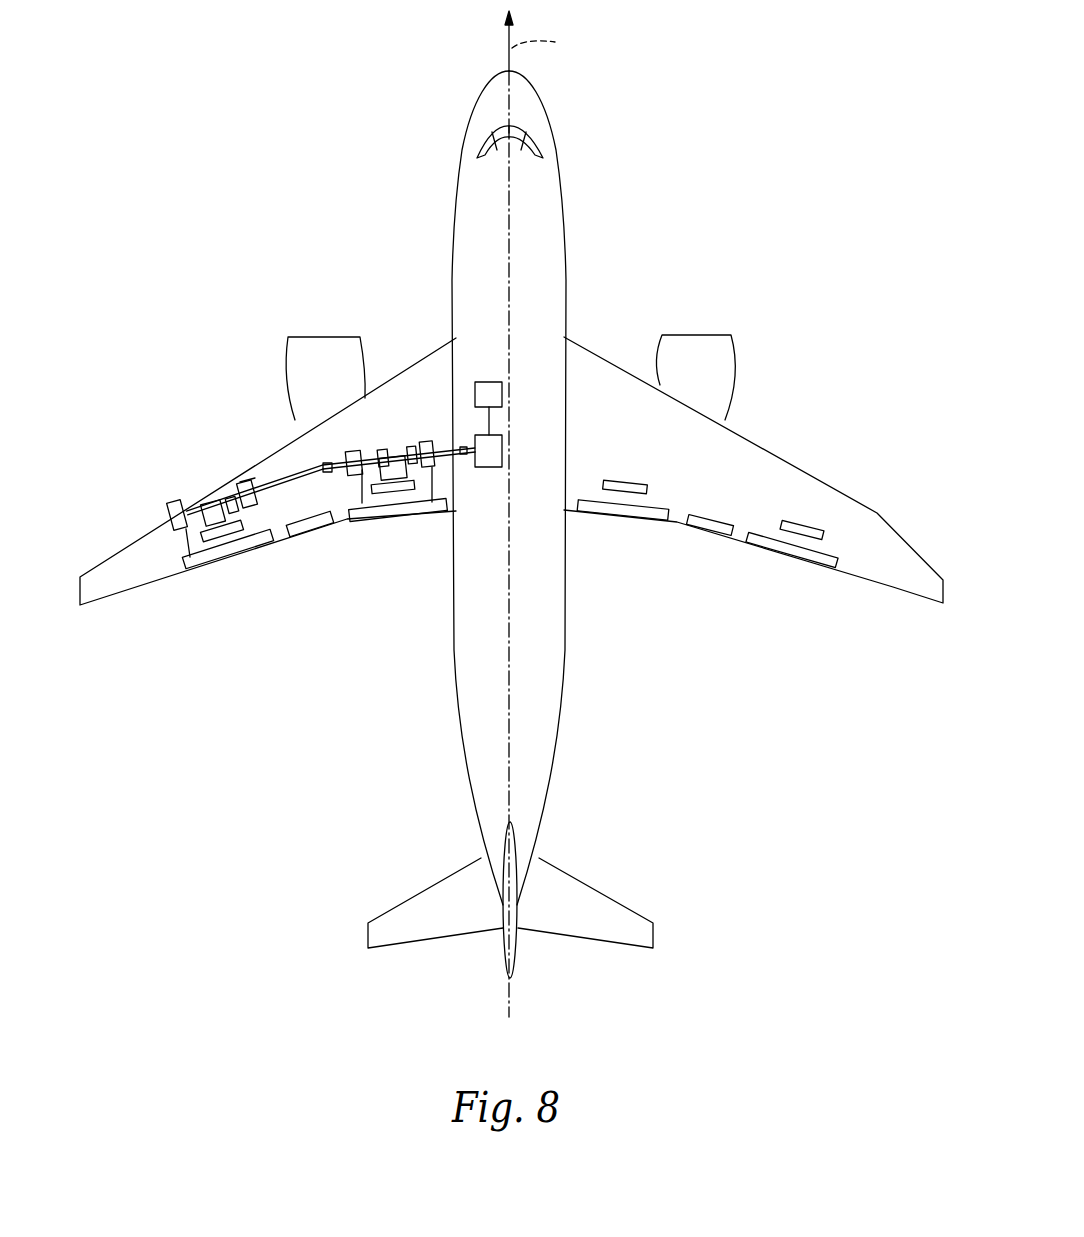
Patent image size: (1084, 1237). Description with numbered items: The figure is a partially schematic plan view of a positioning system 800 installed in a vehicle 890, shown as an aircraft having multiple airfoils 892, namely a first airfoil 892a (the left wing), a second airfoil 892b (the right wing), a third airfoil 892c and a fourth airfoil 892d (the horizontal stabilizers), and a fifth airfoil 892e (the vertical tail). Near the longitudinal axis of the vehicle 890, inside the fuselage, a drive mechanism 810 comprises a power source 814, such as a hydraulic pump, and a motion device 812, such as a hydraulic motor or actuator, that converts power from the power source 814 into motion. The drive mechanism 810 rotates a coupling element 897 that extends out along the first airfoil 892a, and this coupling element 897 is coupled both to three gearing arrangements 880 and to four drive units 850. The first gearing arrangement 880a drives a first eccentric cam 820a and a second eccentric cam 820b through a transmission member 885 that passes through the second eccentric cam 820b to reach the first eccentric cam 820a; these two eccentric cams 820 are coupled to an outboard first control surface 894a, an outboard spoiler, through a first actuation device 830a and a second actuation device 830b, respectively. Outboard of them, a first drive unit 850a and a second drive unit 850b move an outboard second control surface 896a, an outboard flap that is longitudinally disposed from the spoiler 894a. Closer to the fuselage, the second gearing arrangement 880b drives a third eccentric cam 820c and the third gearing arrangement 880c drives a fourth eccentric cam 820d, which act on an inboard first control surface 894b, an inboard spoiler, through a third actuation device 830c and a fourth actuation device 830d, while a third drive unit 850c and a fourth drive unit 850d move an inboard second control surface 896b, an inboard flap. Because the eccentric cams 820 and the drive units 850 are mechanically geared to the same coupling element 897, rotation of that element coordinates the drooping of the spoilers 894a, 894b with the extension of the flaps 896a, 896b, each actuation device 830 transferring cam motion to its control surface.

The positioning system 800 is at (328, 178).
The vehicle 890 is at (511, 514).
The drive mechanism 810 is at (520, 398).
The motion device 812 is at (490, 470).
The power source 814 is at (492, 380).
The eccentric cams 820 is at (155, 522).
The first eccentric cam 820a is at (205, 510).
The second eccentric cam 820b is at (223, 500).
The third eccentric cam 820c is at (378, 458).
The fourth eccentric cam 820d is at (412, 448).
The actuation device 830 is at (176, 550).
The first actuation device 830a is at (185, 547).
The second actuation device 830b is at (240, 543).
The third actuation device 830c is at (355, 518).
The fourth actuation device 830d is at (428, 505).
The drive units 850 is at (140, 547).
The first drive unit 850a is at (172, 505).
The second drive unit 850b is at (292, 337).
The third drive unit 850c is at (352, 452).
The fourth drive unit 850d is at (445, 447).
The gearing arrangements 880 is at (128, 566).
The first gearing arrangement 880a is at (258, 505).
The second gearing arrangement 880b is at (380, 455).
The third gearing arrangement 880c is at (460, 447).
The transmission member 885 is at (208, 507).
The airfoils 892 is at (398, 828).
The first airfoil 892a is at (307, 520).
The second airfoil 892b is at (875, 560).
The third airfoil 892c is at (405, 915).
The fourth airfoil 892d is at (592, 897).
The fifth airfoil 892e is at (512, 833).
The outboard first control surface 894a is at (222, 540).
The inboard first control surface 894b is at (385, 497).
The outboard second control surface 896a is at (243, 555).
The inboard second control surface 896b is at (380, 517).
The coupling element 897 is at (397, 452).